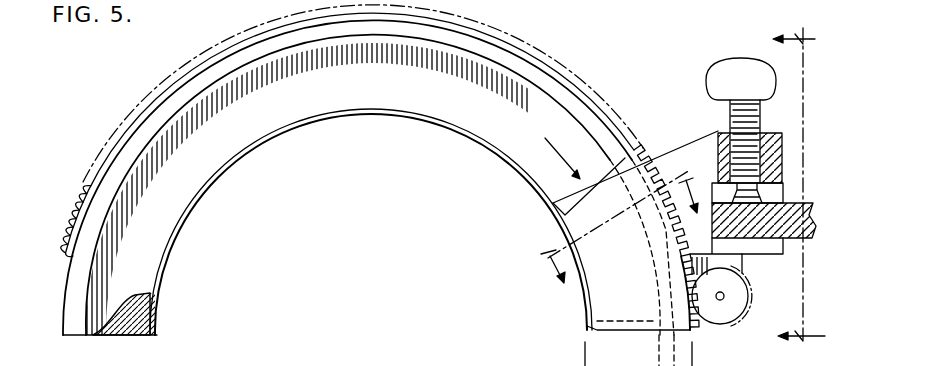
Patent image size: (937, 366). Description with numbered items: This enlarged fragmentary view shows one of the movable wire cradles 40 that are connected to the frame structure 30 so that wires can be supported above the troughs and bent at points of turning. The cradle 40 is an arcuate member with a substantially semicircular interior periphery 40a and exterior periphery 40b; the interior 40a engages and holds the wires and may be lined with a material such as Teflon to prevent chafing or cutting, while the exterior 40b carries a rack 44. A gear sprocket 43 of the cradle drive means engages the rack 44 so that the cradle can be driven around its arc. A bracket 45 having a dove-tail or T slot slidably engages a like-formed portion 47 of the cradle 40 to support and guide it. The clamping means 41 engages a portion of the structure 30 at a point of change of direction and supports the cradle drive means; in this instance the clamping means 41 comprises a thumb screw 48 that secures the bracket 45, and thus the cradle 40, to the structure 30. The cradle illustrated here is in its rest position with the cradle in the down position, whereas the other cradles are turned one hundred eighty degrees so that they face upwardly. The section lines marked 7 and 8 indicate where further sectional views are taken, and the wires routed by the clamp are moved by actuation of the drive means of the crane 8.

The wire cradle 40 is at (277, 137).
The interior periphery 40a is at (491, 188).
The exterior periphery 40b is at (533, 68).
The like-formed portion 47 is at (448, 57).
The rack 44 is at (642, 150).
The bracket 45 is at (714, 123).
The thumb screw 48 is at (736, 72).
The clamping means 41 is at (796, 203).
The frame structure 30 is at (814, 226).
The gear sprocket 43 is at (712, 323).
The section line 7- 7 is at (800, 190).
The crane 8 is at (618, 220).